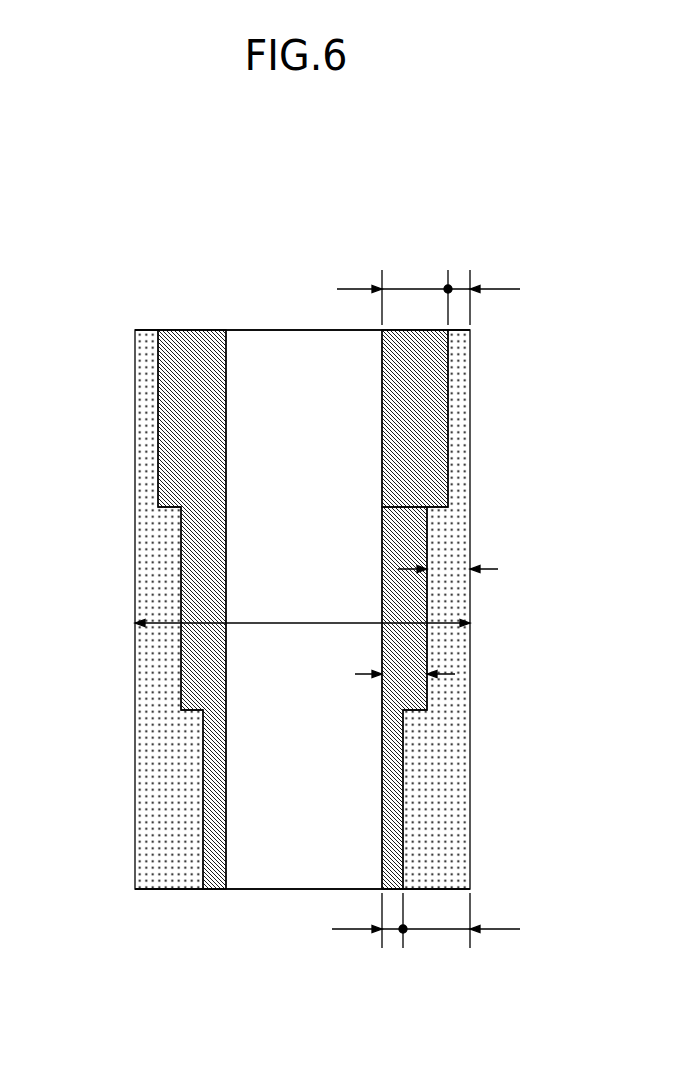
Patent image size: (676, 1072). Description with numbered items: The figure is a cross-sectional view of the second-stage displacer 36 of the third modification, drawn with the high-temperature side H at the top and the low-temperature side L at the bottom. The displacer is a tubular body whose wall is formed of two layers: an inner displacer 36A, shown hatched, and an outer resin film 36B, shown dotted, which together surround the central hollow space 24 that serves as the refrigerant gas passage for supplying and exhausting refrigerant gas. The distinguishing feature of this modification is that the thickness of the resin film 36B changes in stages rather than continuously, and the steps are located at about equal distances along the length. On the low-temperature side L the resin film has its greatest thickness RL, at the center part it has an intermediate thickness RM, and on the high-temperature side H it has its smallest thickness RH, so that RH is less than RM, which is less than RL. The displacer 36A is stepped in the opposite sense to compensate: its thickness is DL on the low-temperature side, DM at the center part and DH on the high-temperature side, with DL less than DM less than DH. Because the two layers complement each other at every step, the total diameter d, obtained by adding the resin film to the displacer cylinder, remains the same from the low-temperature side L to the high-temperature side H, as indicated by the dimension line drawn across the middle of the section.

The hollow space 24 is at (296, 348).
The second-stage displacer 36 is at (441, 197).
The displacer 36A is at (427, 423).
The resin film 36B is at (457, 813).
The total diameter d is at (302, 610).
The high-temperature side displacer cylinder thickness DH is at (412, 285).
The high-temperature side resin film thickness RH is at (462, 285).
The low-temperature side displacer cylinder thickness DL is at (390, 933).
The low-temperature side resin film thickness RL is at (440, 933).
The center part resin film thickness RM is at (447, 569).
The center part displacer cylinder thickness DM is at (400, 677).
The high-temperature side H is at (114, 321).
The low-temperature side L is at (113, 902).